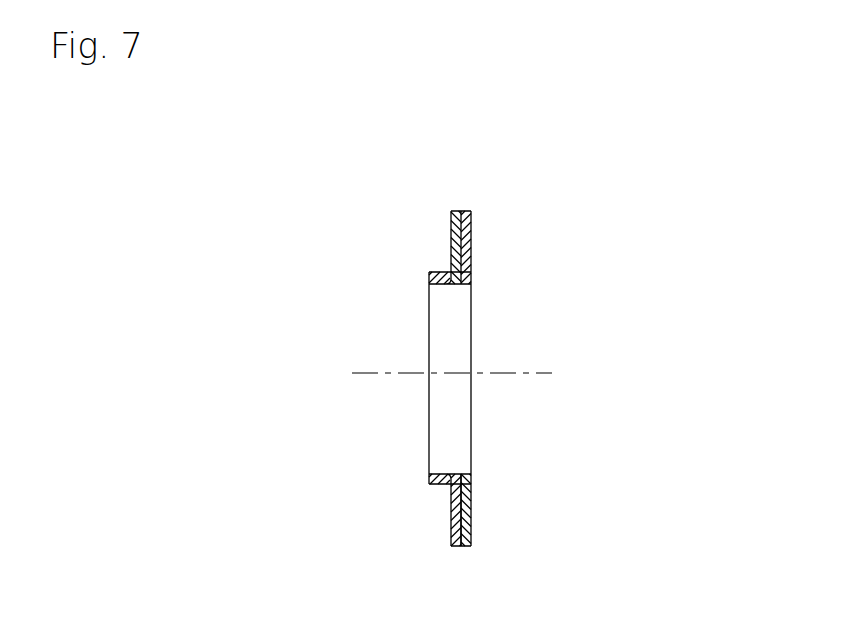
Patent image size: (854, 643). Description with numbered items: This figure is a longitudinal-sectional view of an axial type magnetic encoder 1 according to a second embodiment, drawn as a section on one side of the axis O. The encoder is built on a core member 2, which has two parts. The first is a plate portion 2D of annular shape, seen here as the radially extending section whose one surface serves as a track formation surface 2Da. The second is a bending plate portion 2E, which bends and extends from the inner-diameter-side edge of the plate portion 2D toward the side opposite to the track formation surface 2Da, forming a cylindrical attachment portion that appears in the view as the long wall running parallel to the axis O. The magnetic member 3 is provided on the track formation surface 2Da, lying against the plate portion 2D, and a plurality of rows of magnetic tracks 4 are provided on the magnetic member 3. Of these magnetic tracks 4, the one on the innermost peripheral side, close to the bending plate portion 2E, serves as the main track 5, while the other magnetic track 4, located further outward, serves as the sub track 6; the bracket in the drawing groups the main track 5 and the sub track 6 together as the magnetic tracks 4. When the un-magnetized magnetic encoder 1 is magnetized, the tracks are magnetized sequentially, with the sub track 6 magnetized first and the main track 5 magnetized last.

The magnetic encoder 1 is at (403, 218).
The core member 2 is at (449, 527).
The plate portion 2D is at (452, 505).
The track formation surface 2Da is at (466, 511).
The bending plate portion 2E is at (443, 472).
The magnetic member 3 is at (472, 517).
The magnetic tracks 4 is at (505, 202).
The main track 5 is at (478, 245).
The sub track 6 is at (476, 212).
The optical axis O is at (467, 373).